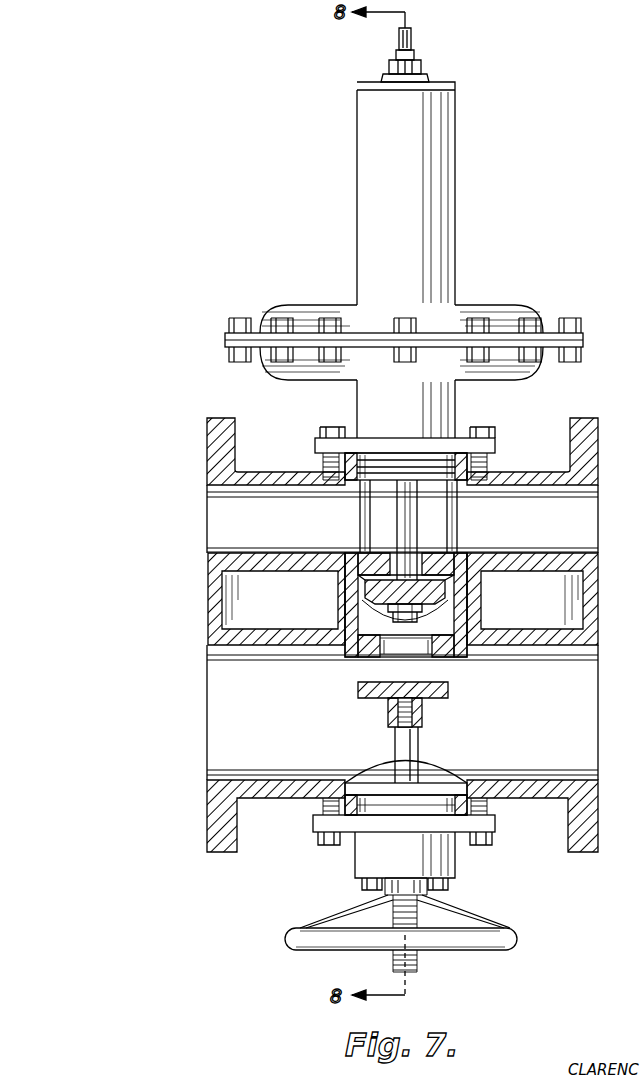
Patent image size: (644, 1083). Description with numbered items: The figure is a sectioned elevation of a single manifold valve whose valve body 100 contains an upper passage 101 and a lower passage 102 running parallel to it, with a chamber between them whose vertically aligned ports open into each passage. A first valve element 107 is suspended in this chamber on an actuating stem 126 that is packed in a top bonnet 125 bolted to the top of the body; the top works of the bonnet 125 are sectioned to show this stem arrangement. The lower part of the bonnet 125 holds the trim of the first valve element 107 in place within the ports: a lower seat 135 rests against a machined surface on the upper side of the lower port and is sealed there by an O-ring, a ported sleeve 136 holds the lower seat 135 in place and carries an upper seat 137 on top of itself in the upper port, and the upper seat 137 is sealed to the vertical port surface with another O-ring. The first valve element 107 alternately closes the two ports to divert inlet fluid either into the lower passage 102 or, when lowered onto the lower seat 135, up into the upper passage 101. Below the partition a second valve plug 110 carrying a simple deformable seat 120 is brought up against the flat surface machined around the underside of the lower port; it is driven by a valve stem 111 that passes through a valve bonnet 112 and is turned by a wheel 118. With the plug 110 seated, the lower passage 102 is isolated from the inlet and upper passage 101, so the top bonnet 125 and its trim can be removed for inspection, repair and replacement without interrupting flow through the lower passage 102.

The valve body 100 is at (207, 443).
The upper passage 101 is at (207, 522).
The lower passage 102 is at (207, 716).
The first valve element 107 is at (442, 536).
The valve plug 110 is at (426, 700).
The valve stem 111 is at (420, 755).
The valve bonnet 112 is at (456, 866).
The wheel 118 is at (518, 940).
The deformable seat 120 is at (366, 683).
The top bonnet 125 is at (456, 410).
The actuating stem 126 is at (378, 520).
The lower seat 135 is at (466, 621).
The ported sleeve 136 is at (468, 592).
The upper seat 137 is at (345, 554).